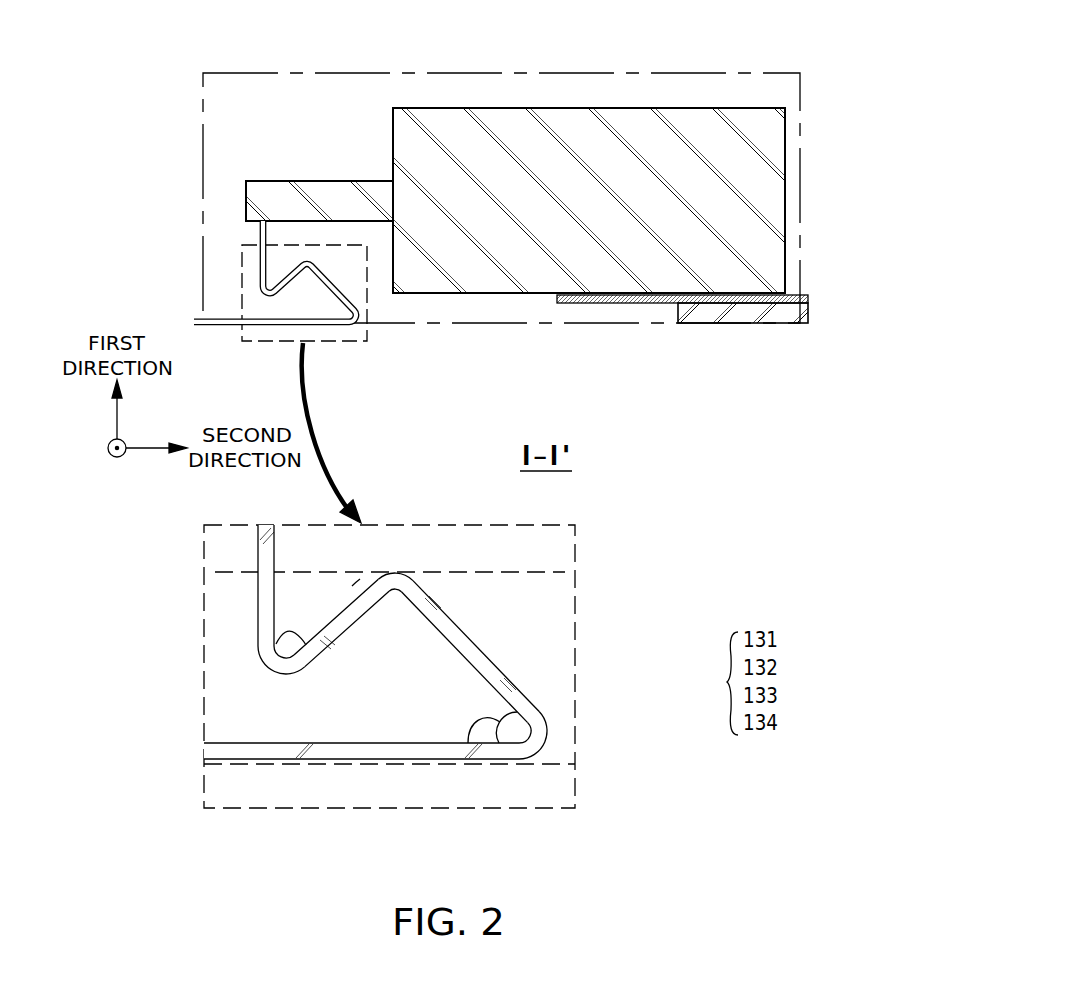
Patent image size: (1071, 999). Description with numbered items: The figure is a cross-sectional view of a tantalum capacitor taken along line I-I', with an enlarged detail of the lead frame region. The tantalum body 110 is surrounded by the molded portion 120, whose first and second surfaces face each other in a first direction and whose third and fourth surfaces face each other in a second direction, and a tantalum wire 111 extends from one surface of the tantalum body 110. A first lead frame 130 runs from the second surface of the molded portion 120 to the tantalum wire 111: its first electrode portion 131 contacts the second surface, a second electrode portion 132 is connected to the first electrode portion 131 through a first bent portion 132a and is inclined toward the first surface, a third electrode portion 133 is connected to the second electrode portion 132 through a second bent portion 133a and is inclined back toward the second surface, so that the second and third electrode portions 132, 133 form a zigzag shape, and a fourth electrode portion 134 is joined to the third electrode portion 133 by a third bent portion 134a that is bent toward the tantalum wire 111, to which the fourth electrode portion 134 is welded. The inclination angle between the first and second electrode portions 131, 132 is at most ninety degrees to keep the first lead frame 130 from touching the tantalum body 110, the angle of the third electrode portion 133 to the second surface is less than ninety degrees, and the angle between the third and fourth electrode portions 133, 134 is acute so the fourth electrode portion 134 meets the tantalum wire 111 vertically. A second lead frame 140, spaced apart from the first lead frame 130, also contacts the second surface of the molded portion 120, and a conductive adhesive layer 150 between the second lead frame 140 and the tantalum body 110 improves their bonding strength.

The tantalum body 110 is at (609, 150).
The tantalum wire 111 is at (320, 192).
The molded portion 120 is at (755, 73).
The first lead frame 130 is at (258, 262).
The first electrode portion 131 is at (402, 752).
The second electrode portion 132 is at (490, 663).
The first bent portion 132a is at (547, 740).
The third electrode portion 133 is at (343, 630).
The second bent portion 133a is at (397, 582).
The fourth electrode portion 134 is at (267, 597).
The third bent portion 134a is at (285, 667).
The second lead frame 140 is at (708, 318).
The conductive adhesive layer 150 is at (752, 300).